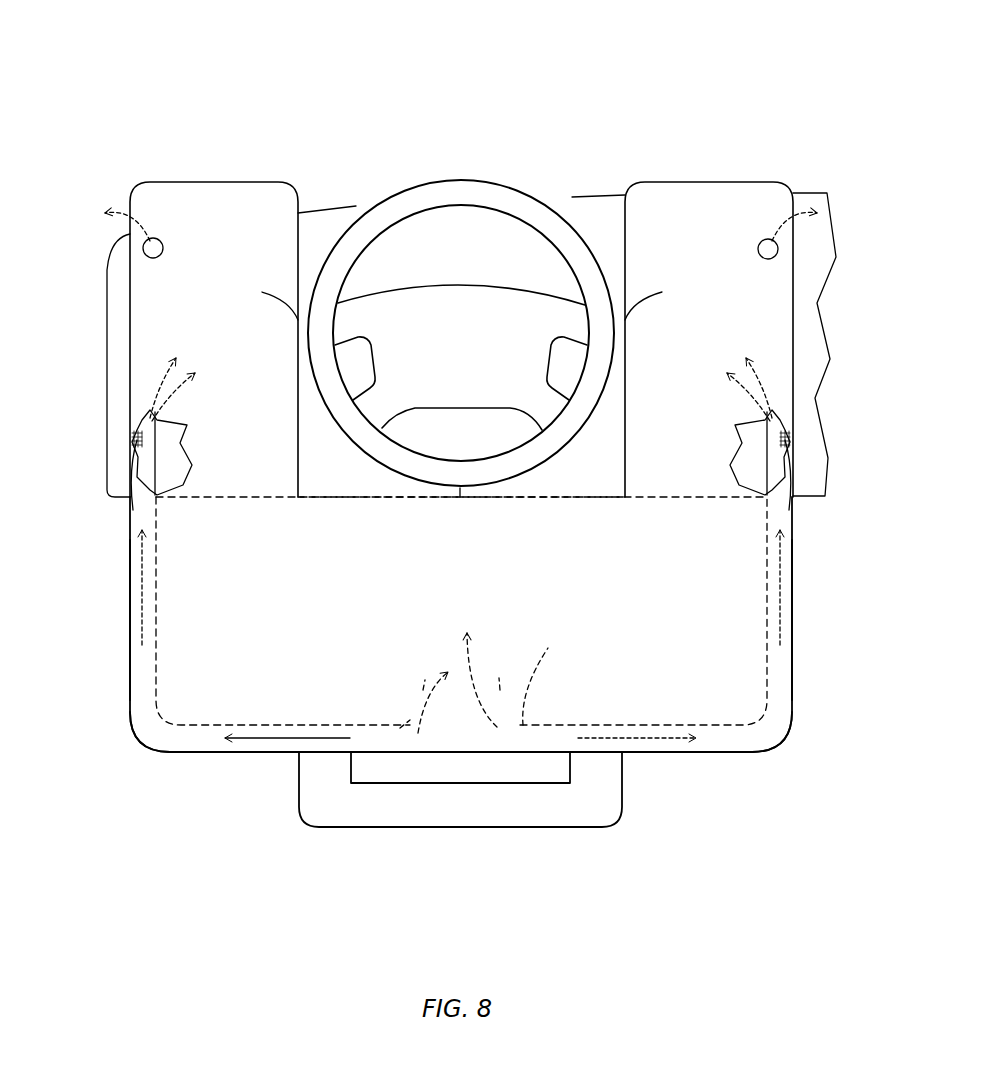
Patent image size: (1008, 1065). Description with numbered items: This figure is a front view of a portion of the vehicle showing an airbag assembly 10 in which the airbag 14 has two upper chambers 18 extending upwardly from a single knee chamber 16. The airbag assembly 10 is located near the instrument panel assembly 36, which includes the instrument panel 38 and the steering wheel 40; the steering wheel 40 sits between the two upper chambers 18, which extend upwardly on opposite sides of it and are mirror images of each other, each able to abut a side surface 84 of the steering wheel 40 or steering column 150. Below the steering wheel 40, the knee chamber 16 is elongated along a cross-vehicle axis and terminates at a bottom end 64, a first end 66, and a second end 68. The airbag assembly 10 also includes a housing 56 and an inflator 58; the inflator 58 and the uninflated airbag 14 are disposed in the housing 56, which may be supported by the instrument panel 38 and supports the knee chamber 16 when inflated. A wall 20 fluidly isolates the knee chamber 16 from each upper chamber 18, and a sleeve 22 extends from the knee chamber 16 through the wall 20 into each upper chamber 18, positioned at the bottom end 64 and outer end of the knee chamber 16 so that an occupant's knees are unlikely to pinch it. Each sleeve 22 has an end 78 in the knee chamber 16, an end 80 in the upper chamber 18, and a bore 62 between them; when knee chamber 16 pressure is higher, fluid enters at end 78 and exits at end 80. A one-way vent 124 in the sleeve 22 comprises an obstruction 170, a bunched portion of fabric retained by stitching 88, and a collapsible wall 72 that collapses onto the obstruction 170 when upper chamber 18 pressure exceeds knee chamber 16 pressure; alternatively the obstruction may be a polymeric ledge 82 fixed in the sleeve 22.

The airbag assembly 10 is at (269, 58).
The airbag 14 is at (168, 180).
The upper chamber 18 is at (288, 182).
The steering wheel 40 is at (426, 181).
The instrument panel 38 is at (638, 182).
The instrument panel assembly 36 is at (829, 192).
The side surface 84 is at (447, 299).
The collapsible wall 72 is at (133, 425).
The obstruction 170 is at (135, 437).
The one-way vent 124 is at (122, 440).
The stitching 88 is at (160, 448).
The end 80 is at (160, 460).
The ledge 82 is at (131, 500).
The wall 20 is at (255, 499).
The sleeve 22 is at (190, 727).
The steering column 150 is at (460, 488).
The knee chamber 16 is at (793, 605).
The first end 66 is at (130, 638).
The second end 68 is at (793, 640).
The bore 62 is at (135, 705).
The bottom end 64 is at (655, 752).
The end 78 is at (400, 718).
The housing 56 is at (327, 828).
The inflator 58 is at (540, 783).